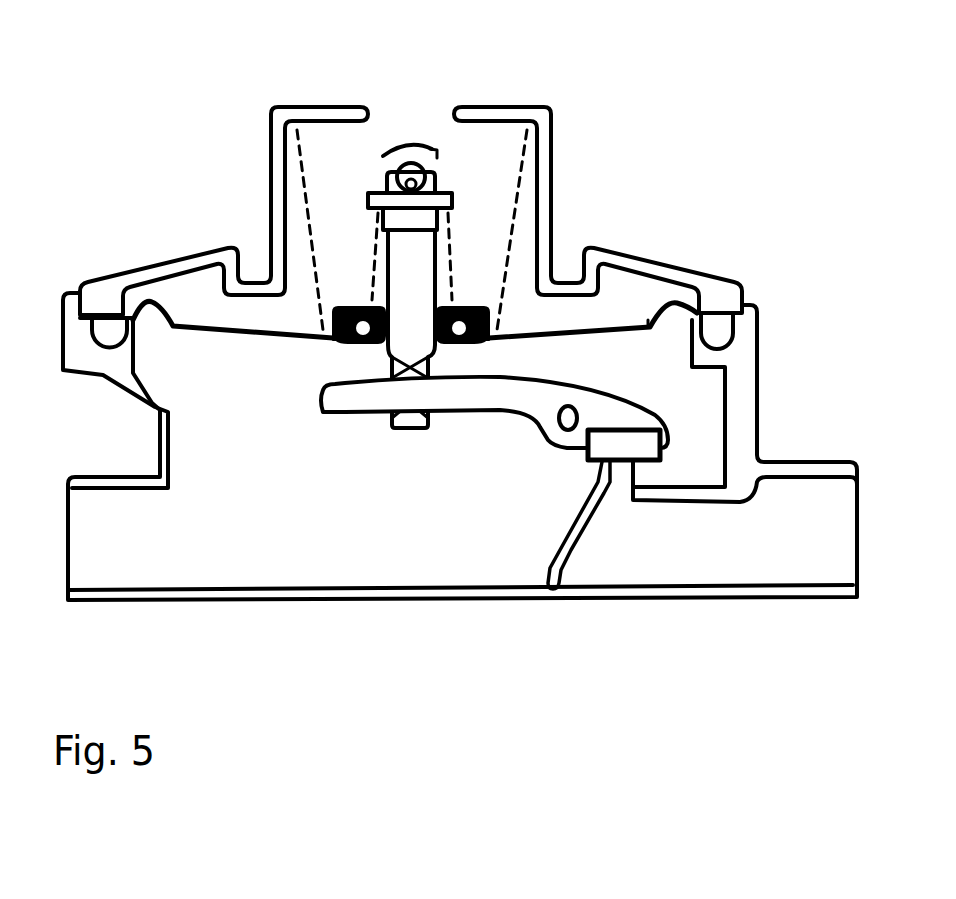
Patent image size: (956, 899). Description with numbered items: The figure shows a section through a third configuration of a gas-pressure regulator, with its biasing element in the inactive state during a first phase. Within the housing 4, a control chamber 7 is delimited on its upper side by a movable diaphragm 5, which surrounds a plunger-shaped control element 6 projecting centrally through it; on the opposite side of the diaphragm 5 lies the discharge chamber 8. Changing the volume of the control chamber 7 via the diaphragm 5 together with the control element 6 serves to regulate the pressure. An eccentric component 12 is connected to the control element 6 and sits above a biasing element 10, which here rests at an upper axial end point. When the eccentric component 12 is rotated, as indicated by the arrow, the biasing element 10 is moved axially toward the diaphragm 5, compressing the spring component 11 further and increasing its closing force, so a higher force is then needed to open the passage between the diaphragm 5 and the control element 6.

The housing 4 is at (670, 268).
The diaphragm 5 is at (197, 327).
The control element 6 is at (398, 270).
The control chamber 7 is at (373, 547).
The discharge chamber 8 is at (366, 168).
The biasing element 10 is at (453, 198).
The spring component 11 is at (452, 275).
The eccentric component 12 is at (433, 180).